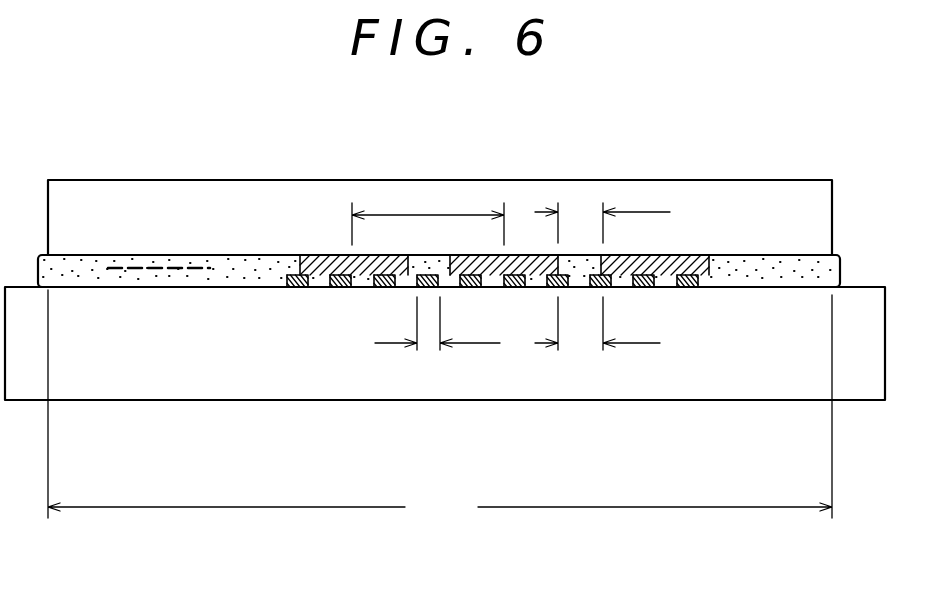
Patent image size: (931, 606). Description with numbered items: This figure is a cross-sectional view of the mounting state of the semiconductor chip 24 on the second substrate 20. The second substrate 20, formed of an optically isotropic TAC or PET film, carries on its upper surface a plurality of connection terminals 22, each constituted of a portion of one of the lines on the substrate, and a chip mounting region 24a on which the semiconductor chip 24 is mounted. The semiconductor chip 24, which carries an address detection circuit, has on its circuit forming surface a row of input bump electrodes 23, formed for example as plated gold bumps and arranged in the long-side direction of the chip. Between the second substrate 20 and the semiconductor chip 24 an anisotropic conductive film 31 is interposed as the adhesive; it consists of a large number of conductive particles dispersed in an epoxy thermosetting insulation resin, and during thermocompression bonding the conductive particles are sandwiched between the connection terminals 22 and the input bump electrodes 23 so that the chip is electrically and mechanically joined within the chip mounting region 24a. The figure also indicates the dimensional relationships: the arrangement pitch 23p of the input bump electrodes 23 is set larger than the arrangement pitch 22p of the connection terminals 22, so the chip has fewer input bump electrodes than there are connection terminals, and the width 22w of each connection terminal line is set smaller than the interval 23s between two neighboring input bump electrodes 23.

The second substrate 20 is at (170, 375).
The connection terminals 22 is at (300, 288).
The input bump electrodes 23 is at (310, 258).
The semiconductor chip 24 is at (752, 197).
The anisotropic conductive film 31 is at (80, 265).
The arrangement pitch of input bump electrodes 23p is at (428, 215).
The interval between neighboring input bump electrodes 23s is at (602, 213).
The width of connection terminal line 22w is at (443, 323).
The arrangement pitch of connection terminals 22p is at (600, 323).
The chip mounting region 24a is at (440, 408).